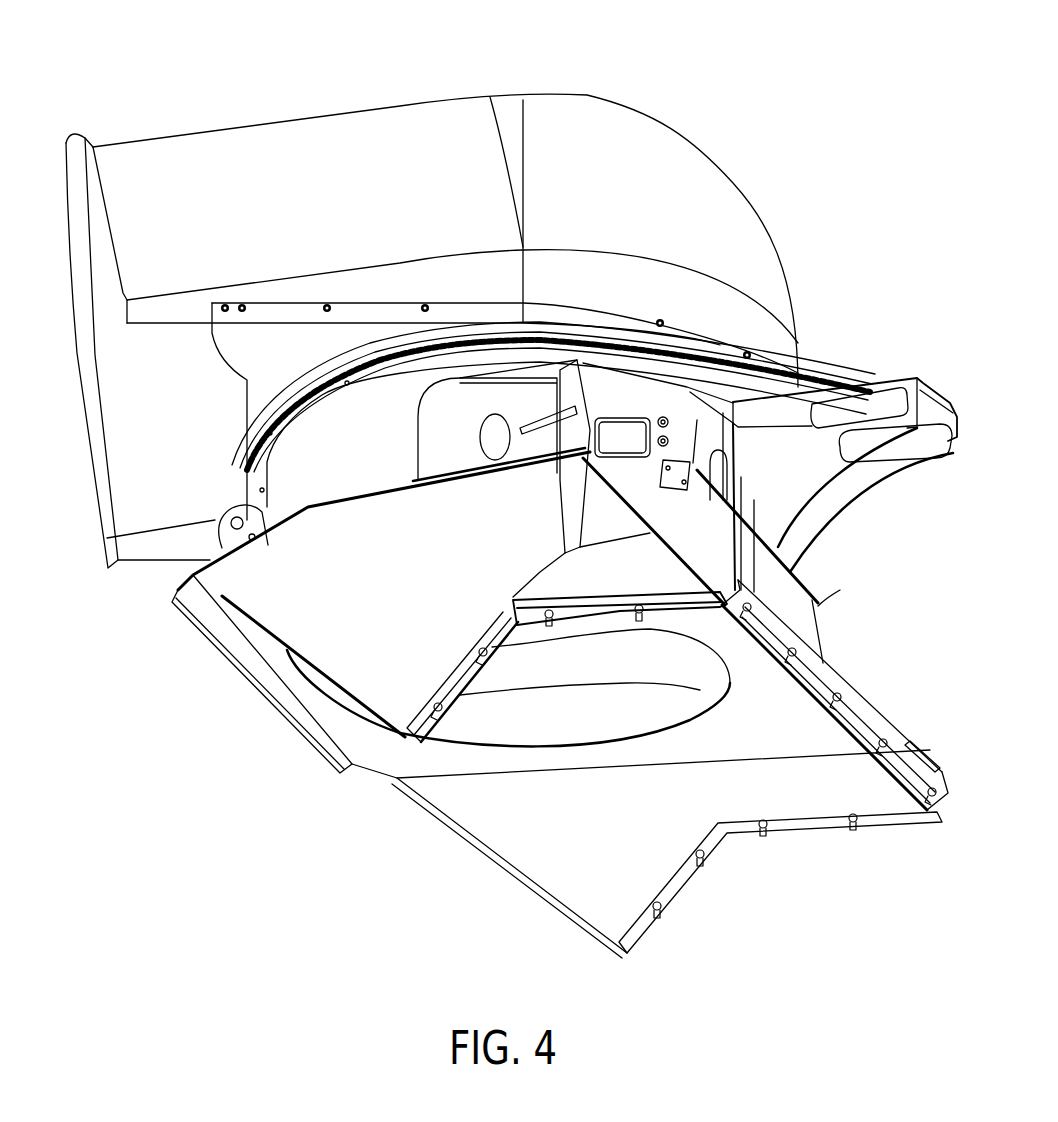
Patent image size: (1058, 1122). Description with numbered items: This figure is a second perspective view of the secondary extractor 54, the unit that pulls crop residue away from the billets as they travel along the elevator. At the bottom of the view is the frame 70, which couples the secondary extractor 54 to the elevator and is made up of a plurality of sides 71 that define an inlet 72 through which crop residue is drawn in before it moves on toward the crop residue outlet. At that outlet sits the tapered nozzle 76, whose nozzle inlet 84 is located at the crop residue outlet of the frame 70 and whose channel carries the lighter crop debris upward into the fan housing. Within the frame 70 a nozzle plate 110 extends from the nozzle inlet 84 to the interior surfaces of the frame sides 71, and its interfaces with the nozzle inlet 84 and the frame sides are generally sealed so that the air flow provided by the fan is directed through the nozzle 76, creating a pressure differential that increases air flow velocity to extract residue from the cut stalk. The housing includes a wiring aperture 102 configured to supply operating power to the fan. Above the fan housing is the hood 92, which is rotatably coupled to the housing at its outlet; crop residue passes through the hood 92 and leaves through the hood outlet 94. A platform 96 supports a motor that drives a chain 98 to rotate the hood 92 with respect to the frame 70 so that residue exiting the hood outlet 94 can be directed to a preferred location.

The secondary extractor 54 is at (499, 332).
The hood 92 is at (671, 145).
The hood outlet 94 is at (125, 432).
The chain 98 is at (815, 380).
The platform 96 is at (912, 385).
The wiring aperture 102 is at (625, 437).
The nozzle inlet 84 is at (712, 682).
The frame 70 is at (560, 714).
The nozzle plate 110 is at (560, 705).
The sides 71 is at (353, 667).
The inlet 72 is at (455, 790).
The tapered nozzle 76 is at (738, 668).